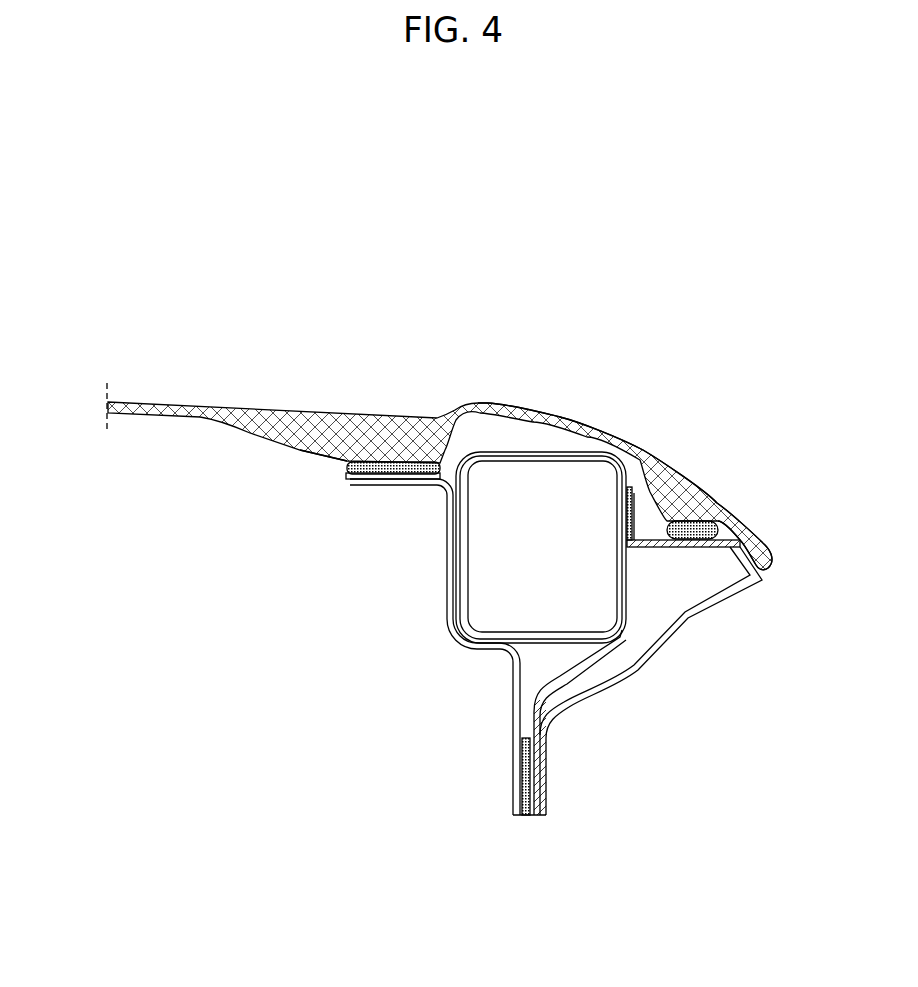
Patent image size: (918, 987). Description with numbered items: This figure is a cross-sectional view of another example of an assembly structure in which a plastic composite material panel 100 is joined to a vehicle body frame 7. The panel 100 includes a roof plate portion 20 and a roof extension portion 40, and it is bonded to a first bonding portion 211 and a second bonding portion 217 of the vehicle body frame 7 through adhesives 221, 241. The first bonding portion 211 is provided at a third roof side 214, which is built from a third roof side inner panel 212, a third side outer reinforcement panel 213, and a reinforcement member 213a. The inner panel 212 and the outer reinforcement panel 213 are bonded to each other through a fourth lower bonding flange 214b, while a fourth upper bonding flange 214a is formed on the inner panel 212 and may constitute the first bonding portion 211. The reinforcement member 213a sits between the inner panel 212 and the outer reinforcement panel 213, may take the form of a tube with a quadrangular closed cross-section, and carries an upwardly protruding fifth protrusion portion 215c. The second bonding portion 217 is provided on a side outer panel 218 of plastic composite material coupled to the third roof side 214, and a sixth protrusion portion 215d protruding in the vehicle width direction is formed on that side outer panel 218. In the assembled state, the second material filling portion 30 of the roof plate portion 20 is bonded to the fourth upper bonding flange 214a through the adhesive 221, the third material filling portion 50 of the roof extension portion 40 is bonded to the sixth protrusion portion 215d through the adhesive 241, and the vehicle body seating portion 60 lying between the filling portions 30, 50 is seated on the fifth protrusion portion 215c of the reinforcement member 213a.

The plastic composite material panel 100 is at (466, 171).
The roof plate portion 20 is at (302, 386).
The second material filling portion 30 is at (388, 443).
The roof extension portion 40 is at (662, 435).
The third material filling portion 50 is at (707, 504).
The vehicle body seating portion 60 is at (523, 417).
The vehicle body frame 7 is at (491, 688).
The first bonding portion 211 is at (380, 496).
The third roof side inner panel 212 is at (447, 622).
The third side outer reinforcement panel 213 is at (510, 650).
The reinforcement member 213a is at (447, 582).
The third roof side 214 is at (400, 655).
The fourth upper bonding flange 214a is at (353, 476).
The fourth lower bonding flange 214b is at (520, 730).
The fifth protrusion portion 215c is at (563, 438).
The sixth protrusion portion 215d is at (705, 548).
The second bonding portion 217 is at (659, 522).
The side outer panel 218 is at (640, 677).
The adhesive 221 is at (347, 468).
The adhesive 241 is at (723, 533).